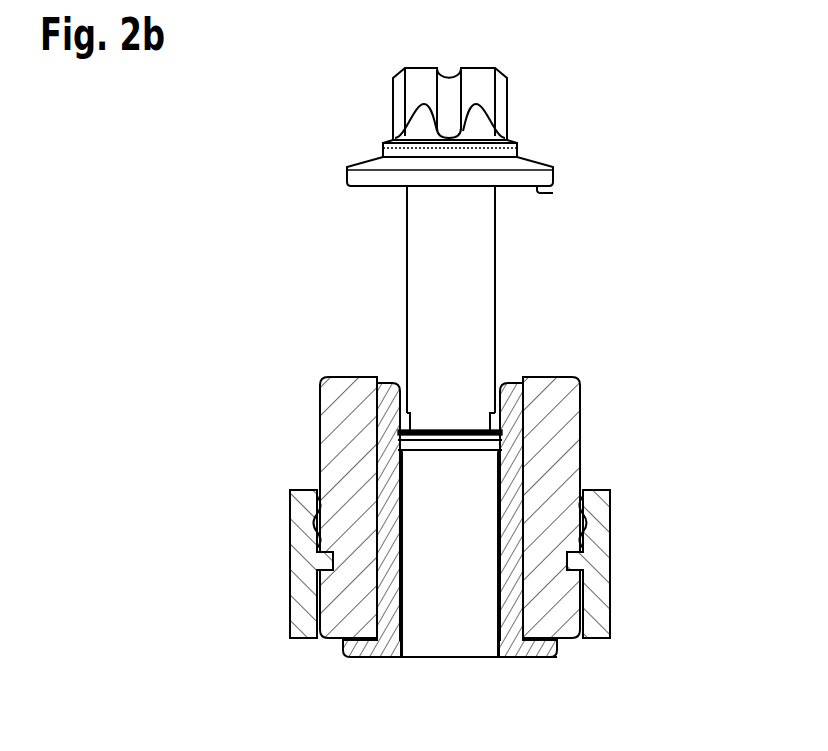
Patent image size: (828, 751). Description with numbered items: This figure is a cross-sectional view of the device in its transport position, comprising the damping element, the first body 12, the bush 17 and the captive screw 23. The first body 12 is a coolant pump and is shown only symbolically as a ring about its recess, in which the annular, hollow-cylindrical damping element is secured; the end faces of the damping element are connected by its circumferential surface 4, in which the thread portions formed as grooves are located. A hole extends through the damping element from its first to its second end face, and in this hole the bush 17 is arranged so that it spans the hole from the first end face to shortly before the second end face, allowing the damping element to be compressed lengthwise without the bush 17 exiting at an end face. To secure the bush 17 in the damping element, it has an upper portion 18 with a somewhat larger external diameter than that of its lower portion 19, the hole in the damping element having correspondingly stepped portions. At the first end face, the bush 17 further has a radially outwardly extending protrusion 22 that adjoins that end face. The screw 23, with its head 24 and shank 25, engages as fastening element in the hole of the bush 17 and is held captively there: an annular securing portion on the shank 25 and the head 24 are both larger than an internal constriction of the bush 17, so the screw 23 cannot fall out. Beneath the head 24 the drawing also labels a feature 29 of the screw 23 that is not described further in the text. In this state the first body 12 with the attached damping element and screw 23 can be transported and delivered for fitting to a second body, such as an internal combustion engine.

The screw 23 is at (336, 118).
The head 24 is at (498, 110).
The screw flange 29 is at (541, 192).
The shank 25 is at (433, 258).
The circumferential surface 4 is at (318, 426).
The upper portion 18 is at (515, 440).
The first body 12 is at (597, 535).
The bush 17 is at (385, 597).
The lower portion 19 is at (517, 592).
The protrusion 22 is at (543, 648).